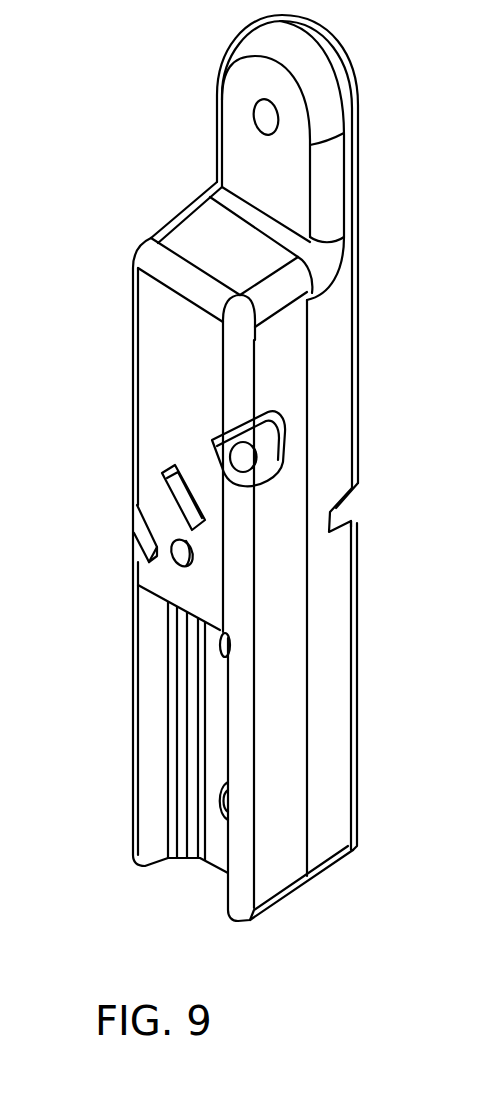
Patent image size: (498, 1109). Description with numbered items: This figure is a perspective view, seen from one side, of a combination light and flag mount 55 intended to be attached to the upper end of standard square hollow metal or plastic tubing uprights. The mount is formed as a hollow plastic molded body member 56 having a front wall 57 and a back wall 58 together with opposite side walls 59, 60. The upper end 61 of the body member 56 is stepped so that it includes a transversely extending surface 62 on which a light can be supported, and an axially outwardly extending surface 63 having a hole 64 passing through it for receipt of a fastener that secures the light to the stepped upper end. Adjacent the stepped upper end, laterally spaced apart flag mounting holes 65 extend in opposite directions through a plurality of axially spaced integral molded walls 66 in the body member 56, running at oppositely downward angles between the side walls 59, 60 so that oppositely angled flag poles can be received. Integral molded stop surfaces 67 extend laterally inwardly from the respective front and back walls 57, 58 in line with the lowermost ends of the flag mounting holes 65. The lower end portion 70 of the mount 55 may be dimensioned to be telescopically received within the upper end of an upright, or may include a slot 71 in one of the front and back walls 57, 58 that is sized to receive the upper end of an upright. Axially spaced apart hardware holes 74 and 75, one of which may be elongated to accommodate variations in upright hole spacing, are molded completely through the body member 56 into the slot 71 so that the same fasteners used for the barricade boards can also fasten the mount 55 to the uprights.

The combination light and flag mount 55 is at (120, 297).
The body member 56 is at (322, 608).
The front wall 57 is at (365, 398).
The back wall 58 is at (163, 430).
The side wall 59 is at (330, 333).
The side wall 60 is at (130, 353).
The upper end 61 is at (340, 290).
The transversely extending surface 62 is at (193, 232).
The axially outwardly extending surface 63 is at (287, 157).
The hole 64 is at (268, 112).
The flag mounting holes 65 is at (277, 472).
The integral molded walls 66 is at (217, 437).
The stop surfaces 67 is at (333, 515).
The lower end portion 70 is at (287, 742).
The slot 71 is at (155, 720).
The hardware hole 74 is at (220, 655).
The hardware hole 75 is at (220, 800).